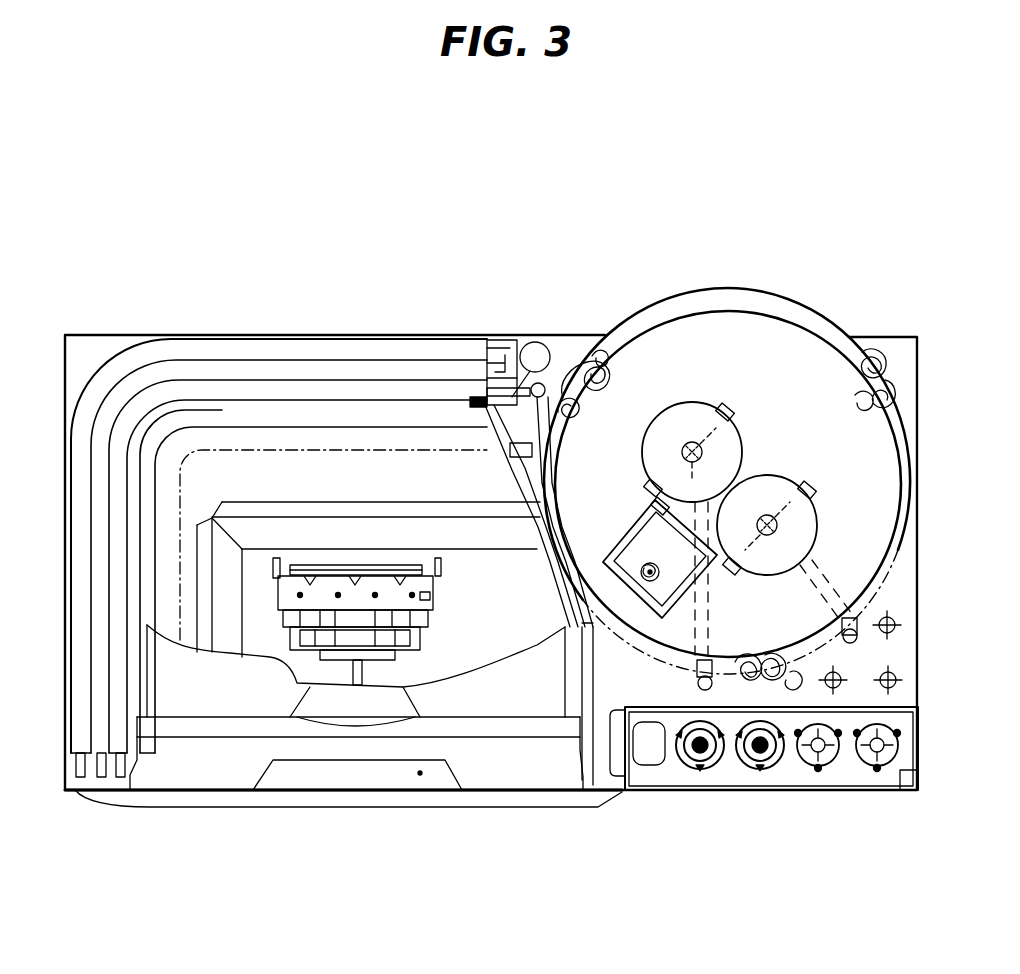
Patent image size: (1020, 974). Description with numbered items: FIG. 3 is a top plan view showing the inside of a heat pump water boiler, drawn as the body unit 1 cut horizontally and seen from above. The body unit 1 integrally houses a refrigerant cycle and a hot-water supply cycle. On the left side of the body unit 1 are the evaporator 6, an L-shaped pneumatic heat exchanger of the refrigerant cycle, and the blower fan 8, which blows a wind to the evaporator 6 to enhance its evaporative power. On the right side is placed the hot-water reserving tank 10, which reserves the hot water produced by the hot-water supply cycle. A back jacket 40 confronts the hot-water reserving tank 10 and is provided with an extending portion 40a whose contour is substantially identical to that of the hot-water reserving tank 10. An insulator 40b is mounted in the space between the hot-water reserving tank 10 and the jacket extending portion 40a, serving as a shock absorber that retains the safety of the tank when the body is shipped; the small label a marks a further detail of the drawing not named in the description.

The apparatus main body 1 is at (638, 800).
The cable bundle 6 is at (270, 387).
The cover 8 is at (218, 695).
The rotary drum 10 is at (755, 368).
The lid mechanism 40 is at (558, 337).
The lid outer rim 40a is at (725, 288).
The lid ring 40b is at (772, 305).
The hub a is at (598, 578).